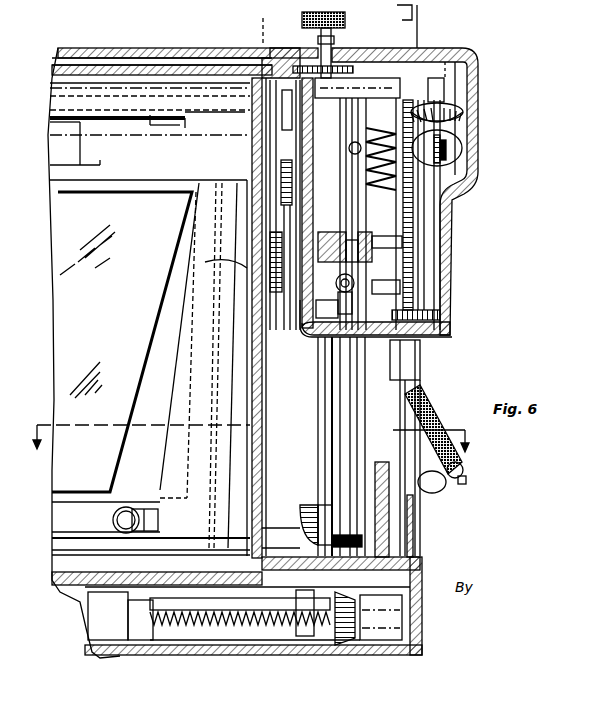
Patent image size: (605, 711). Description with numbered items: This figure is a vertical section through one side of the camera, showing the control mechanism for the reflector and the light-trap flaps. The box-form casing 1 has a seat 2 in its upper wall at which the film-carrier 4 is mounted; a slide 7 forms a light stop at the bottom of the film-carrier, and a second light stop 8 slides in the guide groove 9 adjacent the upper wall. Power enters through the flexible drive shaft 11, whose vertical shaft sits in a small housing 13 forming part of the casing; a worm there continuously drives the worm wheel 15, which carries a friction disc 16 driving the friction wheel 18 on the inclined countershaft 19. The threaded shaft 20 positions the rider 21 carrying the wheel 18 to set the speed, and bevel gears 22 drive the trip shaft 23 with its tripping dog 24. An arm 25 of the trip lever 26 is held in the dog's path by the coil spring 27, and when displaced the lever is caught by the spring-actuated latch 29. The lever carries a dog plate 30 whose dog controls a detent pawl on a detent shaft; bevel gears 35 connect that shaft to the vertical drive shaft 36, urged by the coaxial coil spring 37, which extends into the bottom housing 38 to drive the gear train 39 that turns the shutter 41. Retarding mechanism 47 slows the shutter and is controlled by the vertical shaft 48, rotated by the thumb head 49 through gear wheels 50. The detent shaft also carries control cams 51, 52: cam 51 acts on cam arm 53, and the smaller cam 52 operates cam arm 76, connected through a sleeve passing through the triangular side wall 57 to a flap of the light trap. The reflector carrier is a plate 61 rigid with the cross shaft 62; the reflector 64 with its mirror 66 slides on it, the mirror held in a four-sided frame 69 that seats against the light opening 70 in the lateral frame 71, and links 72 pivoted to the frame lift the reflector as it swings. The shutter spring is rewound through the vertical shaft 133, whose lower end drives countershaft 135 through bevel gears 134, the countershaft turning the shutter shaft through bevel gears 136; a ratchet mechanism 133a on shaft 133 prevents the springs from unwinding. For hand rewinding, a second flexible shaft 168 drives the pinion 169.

The cross shaft 62 is at (100, 88).
The guide groove 9 is at (143, 66).
The seat 2 is at (180, 54).
The trip shaft 23 is at (266, 60).
The light stop 8 is at (294, 8).
The slide 7 is at (266, 25).
The thumb head 49 is at (345, 22).
The gear wheels 50 is at (333, 46).
The tripping dog 24 is at (346, 198).
The arm 25 is at (356, 132).
The coil spring 27 is at (366, 150).
The trip lever 26 is at (356, 155).
The inclined countershaft 19 is at (445, 92).
The bevel gears 22 is at (460, 108).
The driven friction wheel 18 is at (460, 140).
The threaded shaft 20 is at (477, 164).
The coaxial coil spring 37 is at (447, 192).
The rider 21 is at (440, 204).
The dog plate 30 is at (432, 214).
The bevel gears 35 is at (420, 232).
The vertical drive shaft 36 is at (412, 246).
The friction disc 16 is at (414, 270).
The worm wheel 15 is at (428, 288).
The pinion 169 is at (442, 315).
The carrier plate 61 is at (135, 124).
The light opening 70 is at (168, 128).
The lateral frame 71 is at (212, 130).
The cam arm 76 is at (262, 136).
The cam arm 53 is at (292, 146).
The four-sided frame 69 is at (185, 238).
The silvered glass mirror 66 is at (85, 266).
The reflector 64 is at (96, 305).
The side wall 57 is at (223, 368).
The link 72 is at (187, 383).
The control cam 52 is at (287, 206).
The control cam 51 is at (294, 296).
The spring-actuated latch 29 is at (330, 335).
The small housing 13 is at (364, 338).
The vertical shaft 48 is at (330, 406).
The vertical shaft 133 is at (345, 442).
The bevel gears 134 is at (312, 505).
The countershaft 135 is at (292, 498).
The film-carrier 4 is at (252, 447).
The bevel gears 136 is at (110, 524).
The retarding mechanism 47 is at (236, 604).
The shutter 41 is at (268, 590).
The casing 1 is at (442, 416).
The flexible drive shaft 11 is at (466, 476).
The second flexible shaft 168 is at (440, 490).
The ratchet mechanism 133a is at (422, 556).
The gear train 39 is at (424, 576).
The bottom housing 38 is at (420, 615).